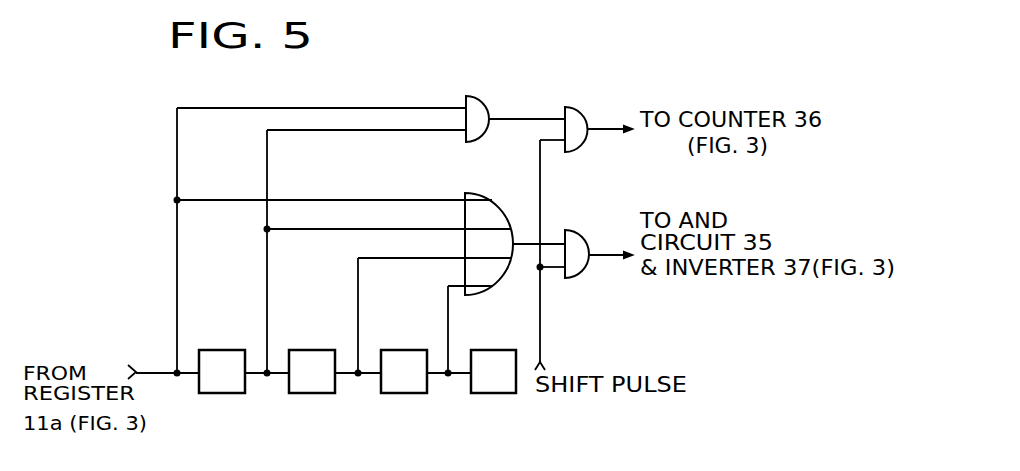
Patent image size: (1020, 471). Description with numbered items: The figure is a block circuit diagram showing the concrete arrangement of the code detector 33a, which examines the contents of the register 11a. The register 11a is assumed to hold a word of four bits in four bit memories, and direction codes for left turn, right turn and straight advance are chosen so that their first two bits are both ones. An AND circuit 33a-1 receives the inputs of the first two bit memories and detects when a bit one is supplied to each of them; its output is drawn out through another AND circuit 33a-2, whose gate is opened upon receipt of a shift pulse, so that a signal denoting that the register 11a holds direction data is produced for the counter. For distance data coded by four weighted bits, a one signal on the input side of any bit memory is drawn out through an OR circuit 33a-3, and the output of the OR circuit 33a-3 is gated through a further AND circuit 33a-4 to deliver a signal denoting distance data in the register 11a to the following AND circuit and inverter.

The register 11a is at (380, 429).
The code detector 33a is at (370, 183).
The AND circuit 33a-1 is at (477, 85).
The AND circuit 33a-2 is at (569, 105).
The OR circuit 33a-3 is at (478, 183).
The AND circuit 33a-4 is at (572, 280).